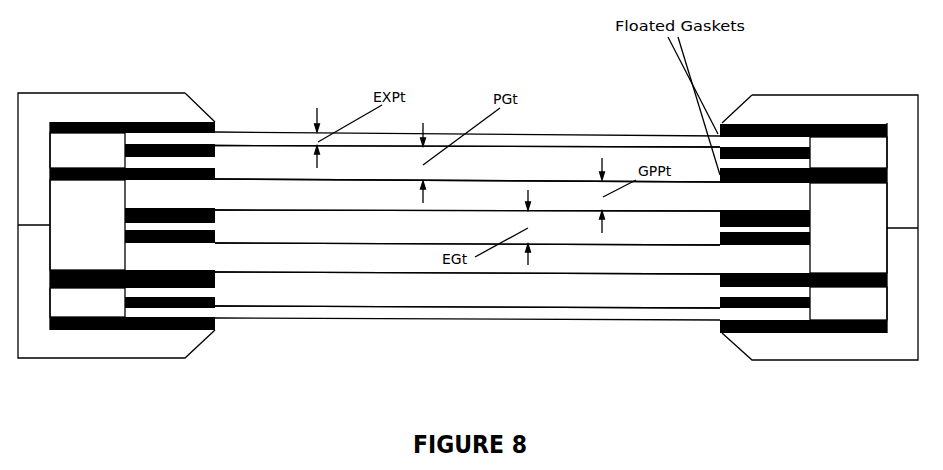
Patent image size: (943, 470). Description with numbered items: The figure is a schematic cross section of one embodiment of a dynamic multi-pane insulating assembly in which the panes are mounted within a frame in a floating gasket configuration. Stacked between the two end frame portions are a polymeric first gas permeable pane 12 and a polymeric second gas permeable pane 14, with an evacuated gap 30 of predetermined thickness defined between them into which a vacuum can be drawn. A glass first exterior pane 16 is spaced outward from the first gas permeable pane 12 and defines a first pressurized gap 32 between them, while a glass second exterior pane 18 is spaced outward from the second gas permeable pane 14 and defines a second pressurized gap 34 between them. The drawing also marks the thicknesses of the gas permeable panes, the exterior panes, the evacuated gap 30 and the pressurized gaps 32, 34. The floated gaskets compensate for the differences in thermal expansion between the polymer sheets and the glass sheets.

The first gas permeable pane 12 is at (296, 202).
The second gas permeable pane 14 is at (640, 268).
The first exterior pane 16 is at (285, 140).
The second exterior pane 18 is at (637, 313).
The evacuated gap 30 is at (356, 234).
The first pressurized gap 32 is at (532, 172).
The second pressurized gap 34 is at (331, 298).